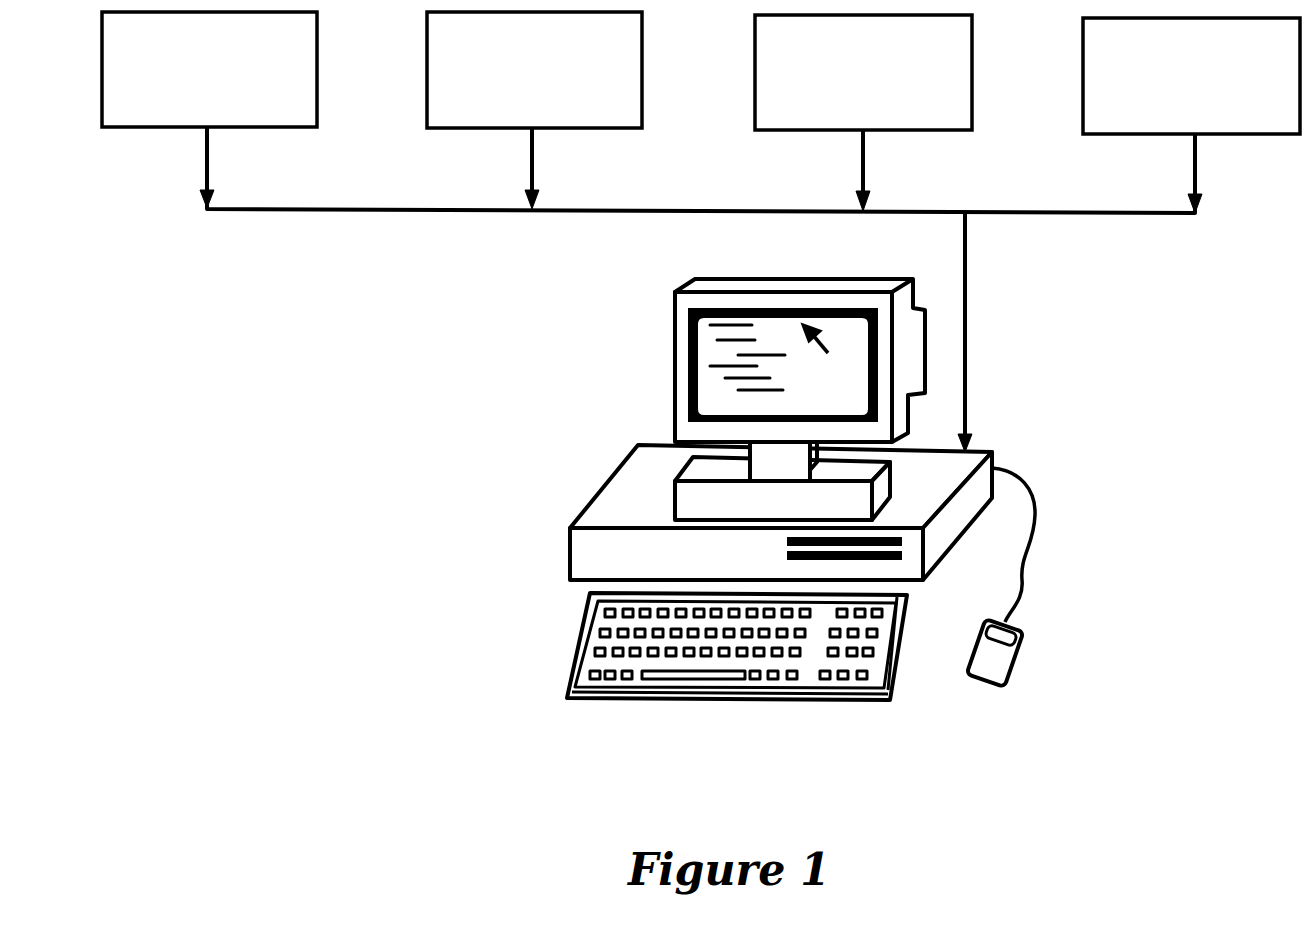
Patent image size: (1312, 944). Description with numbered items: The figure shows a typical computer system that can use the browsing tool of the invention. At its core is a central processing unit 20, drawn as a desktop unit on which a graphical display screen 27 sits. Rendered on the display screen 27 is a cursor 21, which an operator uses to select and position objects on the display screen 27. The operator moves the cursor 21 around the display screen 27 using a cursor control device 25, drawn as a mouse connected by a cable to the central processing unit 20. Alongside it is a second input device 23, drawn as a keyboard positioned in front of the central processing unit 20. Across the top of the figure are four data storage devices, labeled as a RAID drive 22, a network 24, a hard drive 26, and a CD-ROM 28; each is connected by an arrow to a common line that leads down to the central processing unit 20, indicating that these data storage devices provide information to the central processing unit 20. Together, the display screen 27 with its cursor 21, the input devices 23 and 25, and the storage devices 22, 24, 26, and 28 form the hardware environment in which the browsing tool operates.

The central processing unit 20 is at (584, 497).
The cursor 21 is at (823, 333).
The data storage device 22 is at (1191, 115).
The input device 23 is at (737, 707).
The data storage device 24 is at (863, 113).
The cursor control device 25 is at (1028, 656).
The data storage device 26 is at (534, 110).
The graphical display screen 27 is at (668, 362).
The data storage device 28 is at (209, 110).